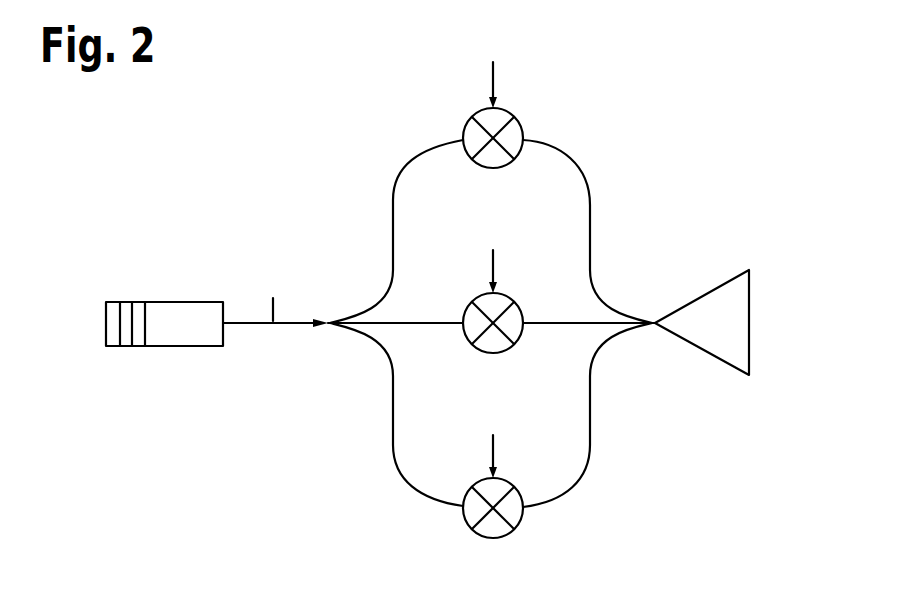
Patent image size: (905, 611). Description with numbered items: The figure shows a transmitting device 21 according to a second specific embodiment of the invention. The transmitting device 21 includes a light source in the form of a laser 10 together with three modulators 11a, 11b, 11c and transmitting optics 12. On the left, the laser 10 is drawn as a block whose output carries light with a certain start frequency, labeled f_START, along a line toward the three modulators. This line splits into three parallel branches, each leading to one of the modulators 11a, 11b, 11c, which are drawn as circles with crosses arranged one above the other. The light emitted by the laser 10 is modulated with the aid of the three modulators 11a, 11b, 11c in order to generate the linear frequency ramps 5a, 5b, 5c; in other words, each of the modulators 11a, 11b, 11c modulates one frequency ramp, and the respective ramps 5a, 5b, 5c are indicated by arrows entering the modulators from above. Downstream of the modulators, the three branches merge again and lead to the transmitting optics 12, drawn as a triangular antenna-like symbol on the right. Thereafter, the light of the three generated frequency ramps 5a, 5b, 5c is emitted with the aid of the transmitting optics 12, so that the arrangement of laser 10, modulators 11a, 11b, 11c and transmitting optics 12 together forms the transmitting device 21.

The laser 10 is at (171, 300).
The modulator 11a is at (463, 136).
The modulator 11b is at (470, 300).
The modulator 11c is at (465, 521).
The linear frequency ramp 5a is at (493, 69).
The linear frequency ramp 5b is at (493, 253).
The linear frequency ramp 5c is at (493, 439).
The transmitting optics 12 is at (690, 303).
The transmitting device 21 is at (705, 115).